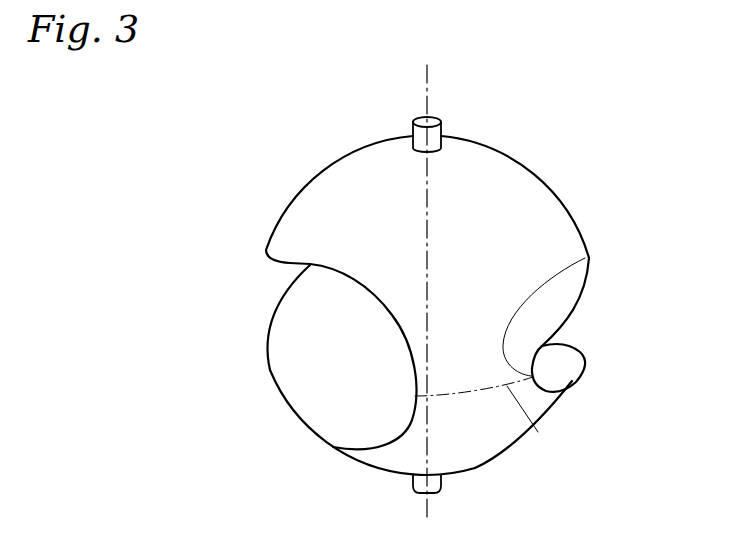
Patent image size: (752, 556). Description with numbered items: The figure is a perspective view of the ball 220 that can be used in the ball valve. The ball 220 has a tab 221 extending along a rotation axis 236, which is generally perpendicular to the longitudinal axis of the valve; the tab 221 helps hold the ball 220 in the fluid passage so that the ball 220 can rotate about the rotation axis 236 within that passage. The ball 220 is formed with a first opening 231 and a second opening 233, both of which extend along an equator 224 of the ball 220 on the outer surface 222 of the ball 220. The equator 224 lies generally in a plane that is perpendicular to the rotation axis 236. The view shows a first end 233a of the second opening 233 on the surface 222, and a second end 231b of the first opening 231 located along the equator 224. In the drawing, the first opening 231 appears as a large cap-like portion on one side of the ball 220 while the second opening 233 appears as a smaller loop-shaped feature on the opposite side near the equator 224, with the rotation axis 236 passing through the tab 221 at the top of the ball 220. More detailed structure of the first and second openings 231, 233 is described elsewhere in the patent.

The ball 220 is at (530, 170).
The tab 221 is at (413, 133).
The surface 222 is at (350, 188).
The equator 224 is at (547, 440).
The first opening 231 is at (330, 367).
The second end of the first opening 231b is at (417, 388).
The second opening 233 is at (557, 353).
The first end of the second opening 233a is at (585, 258).
The rotation axis 236 is at (427, 83).